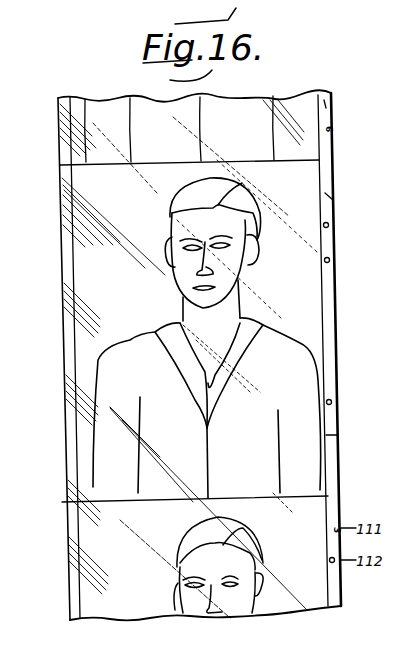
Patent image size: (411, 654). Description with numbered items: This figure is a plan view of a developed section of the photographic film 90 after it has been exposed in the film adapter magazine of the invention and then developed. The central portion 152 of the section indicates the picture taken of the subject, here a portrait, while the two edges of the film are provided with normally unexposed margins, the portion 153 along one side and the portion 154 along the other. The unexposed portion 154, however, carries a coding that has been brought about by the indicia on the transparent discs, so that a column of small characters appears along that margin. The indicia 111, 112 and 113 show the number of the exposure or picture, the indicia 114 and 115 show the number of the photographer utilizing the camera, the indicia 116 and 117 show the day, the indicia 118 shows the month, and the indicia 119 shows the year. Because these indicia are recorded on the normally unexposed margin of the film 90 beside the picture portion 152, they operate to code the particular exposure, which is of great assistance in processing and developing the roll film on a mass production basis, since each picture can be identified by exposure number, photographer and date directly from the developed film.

The film 90 is at (86, 257).
The portion 152 is at (303, 177).
The normally unexposed portion 153 is at (73, 421).
The normally unexposed portion 154 is at (330, 243).
The indicia 111 is at (334, 197).
The indicia 112 is at (334, 224).
The indicia 113 is at (334, 262).
The indicia 114 is at (336, 297).
The indicia 115 is at (336, 329).
The indicia 116 is at (336, 373).
The indicia 117 is at (336, 403).
The indicia 118 is at (338, 436).
The indicia 119 is at (338, 468).